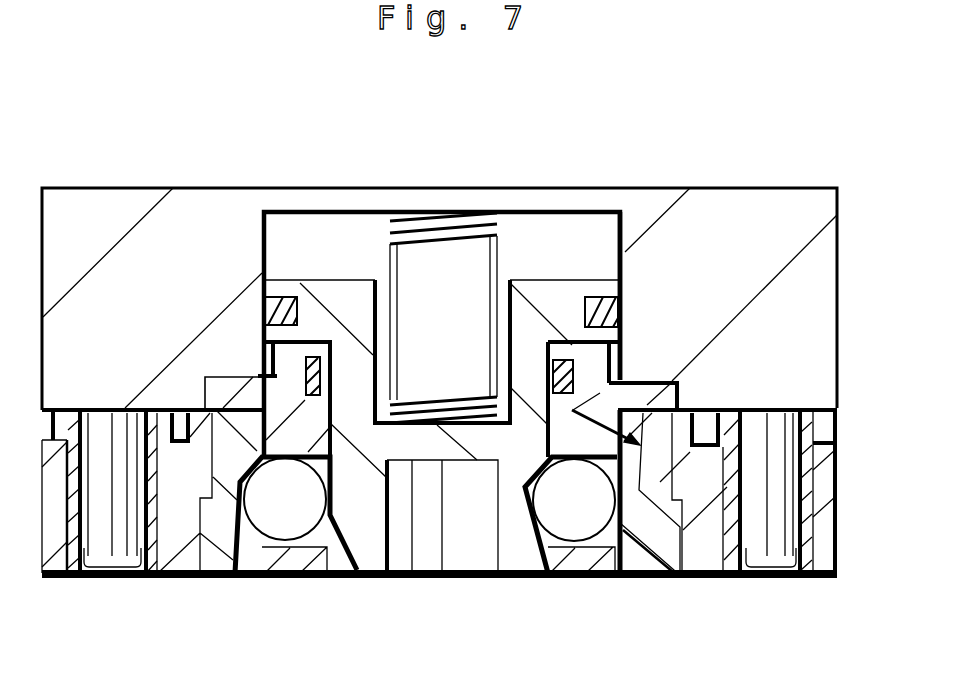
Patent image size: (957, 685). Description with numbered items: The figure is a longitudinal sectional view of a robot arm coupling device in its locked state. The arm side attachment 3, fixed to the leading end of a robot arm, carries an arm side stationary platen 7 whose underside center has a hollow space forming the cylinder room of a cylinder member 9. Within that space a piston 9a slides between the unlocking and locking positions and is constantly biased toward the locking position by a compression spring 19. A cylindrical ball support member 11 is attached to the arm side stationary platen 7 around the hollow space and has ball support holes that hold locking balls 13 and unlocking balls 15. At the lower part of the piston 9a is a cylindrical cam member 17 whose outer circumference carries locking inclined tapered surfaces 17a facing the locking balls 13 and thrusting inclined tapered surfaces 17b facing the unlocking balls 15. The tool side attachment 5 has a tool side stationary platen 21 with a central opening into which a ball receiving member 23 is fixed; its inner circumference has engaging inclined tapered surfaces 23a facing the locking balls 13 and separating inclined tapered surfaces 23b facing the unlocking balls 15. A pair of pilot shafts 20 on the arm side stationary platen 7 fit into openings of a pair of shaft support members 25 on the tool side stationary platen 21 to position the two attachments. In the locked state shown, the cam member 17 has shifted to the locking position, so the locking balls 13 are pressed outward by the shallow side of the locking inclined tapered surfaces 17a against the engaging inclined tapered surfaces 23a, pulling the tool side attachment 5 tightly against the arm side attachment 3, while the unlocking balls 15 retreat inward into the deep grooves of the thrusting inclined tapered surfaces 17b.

The arm side attachment 3 is at (705, 190).
The tool side attachment 5 is at (530, 578).
The arm side stationary platen 7 is at (793, 217).
The cylinder member 9 is at (294, 238).
The piston 9a is at (328, 297).
The ball support member 11 is at (639, 380).
The locking balls 13 is at (287, 515).
The unlocking balls 15 is at (682, 578).
The cam member 17 is at (482, 578).
The locking inclined tapered surfaces 17a is at (348, 578).
The thrusting inclined tapered surfaces 17b is at (600, 578).
The compression spring 19 is at (411, 212).
The pilot shafts 20 is at (103, 525).
The tool side stationary platen 21 is at (827, 578).
The ball receiving member 23 is at (213, 578).
The engaging inclined tapered surfaces 23a is at (255, 578).
The separating inclined tapered surfaces 23b is at (575, 410).
The shaft support members 25 is at (75, 578).